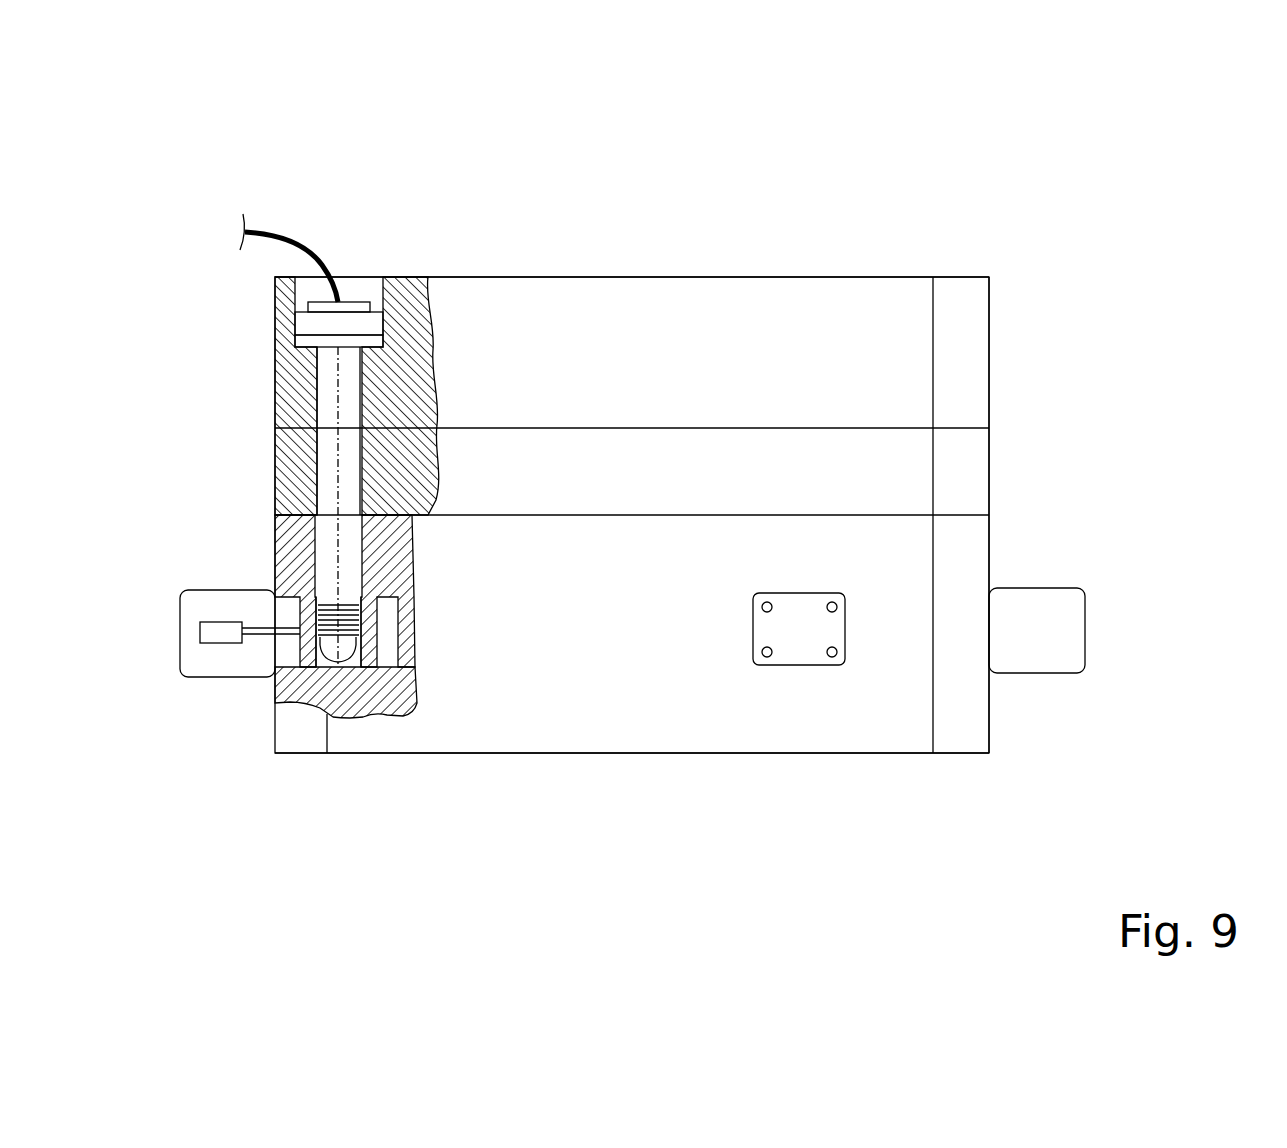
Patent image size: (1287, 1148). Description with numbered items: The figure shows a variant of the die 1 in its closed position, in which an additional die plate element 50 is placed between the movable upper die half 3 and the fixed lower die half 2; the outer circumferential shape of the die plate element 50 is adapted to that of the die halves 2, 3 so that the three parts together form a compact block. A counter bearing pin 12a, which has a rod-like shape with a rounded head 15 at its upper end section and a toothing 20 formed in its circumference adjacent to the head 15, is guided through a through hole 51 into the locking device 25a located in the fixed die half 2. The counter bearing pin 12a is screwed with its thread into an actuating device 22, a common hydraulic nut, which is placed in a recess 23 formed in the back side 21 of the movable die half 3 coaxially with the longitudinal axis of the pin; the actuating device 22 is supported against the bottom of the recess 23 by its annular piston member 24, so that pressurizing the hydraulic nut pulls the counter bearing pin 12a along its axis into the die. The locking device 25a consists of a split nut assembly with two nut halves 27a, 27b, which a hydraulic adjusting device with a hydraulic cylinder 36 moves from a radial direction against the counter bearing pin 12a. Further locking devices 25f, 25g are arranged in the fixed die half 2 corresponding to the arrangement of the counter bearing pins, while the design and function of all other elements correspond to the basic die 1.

The die 1 is at (1063, 176).
The fixed lower die half 2 is at (598, 723).
The movable upper die half 3 is at (620, 287).
The counter bearing pin 12a is at (328, 460).
The rounded head 15 is at (328, 658).
The toothing 20 is at (333, 660).
The back side 21 is at (776, 264).
The actuating device 22 is at (310, 322).
The recess 23 is at (365, 292).
The annular piston member 24 is at (302, 340).
The locking device 25a is at (219, 584).
The locking device 25f is at (1047, 631).
The locking device 25g is at (805, 625).
The first nut half 27a is at (300, 647).
The second nut half 27b is at (377, 657).
The hydraulic cylinder 36 is at (210, 634).
The die plate element 50 is at (885, 456).
The through hole 51 is at (275, 488).